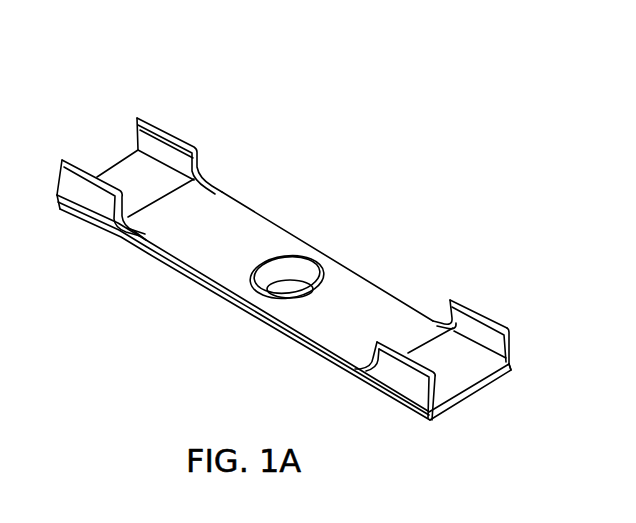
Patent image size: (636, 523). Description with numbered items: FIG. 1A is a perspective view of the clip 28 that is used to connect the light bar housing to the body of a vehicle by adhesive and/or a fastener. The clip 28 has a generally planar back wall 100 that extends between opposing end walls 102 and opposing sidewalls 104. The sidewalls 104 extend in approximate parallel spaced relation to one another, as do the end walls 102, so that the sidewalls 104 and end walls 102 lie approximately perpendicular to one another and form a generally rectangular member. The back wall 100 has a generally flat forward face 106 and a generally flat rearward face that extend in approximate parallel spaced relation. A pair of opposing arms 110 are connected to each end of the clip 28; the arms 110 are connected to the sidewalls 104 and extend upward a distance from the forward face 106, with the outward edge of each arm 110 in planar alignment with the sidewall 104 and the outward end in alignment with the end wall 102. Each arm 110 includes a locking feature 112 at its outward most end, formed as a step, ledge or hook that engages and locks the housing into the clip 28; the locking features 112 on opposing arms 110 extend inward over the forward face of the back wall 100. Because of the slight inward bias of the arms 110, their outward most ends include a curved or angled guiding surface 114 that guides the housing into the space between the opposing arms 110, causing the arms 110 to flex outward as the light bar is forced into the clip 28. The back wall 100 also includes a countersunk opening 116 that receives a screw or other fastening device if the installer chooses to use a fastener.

The clip 28 is at (288, 132).
The back wall 100 is at (404, 302).
The end wall 102 is at (480, 390).
The sidewall 104 is at (387, 289).
The forward face 106 is at (372, 331).
The arm 110 is at (520, 332).
The locking feature 112 is at (497, 351).
The guiding surface 114 is at (477, 308).
The opening 116 is at (295, 288).